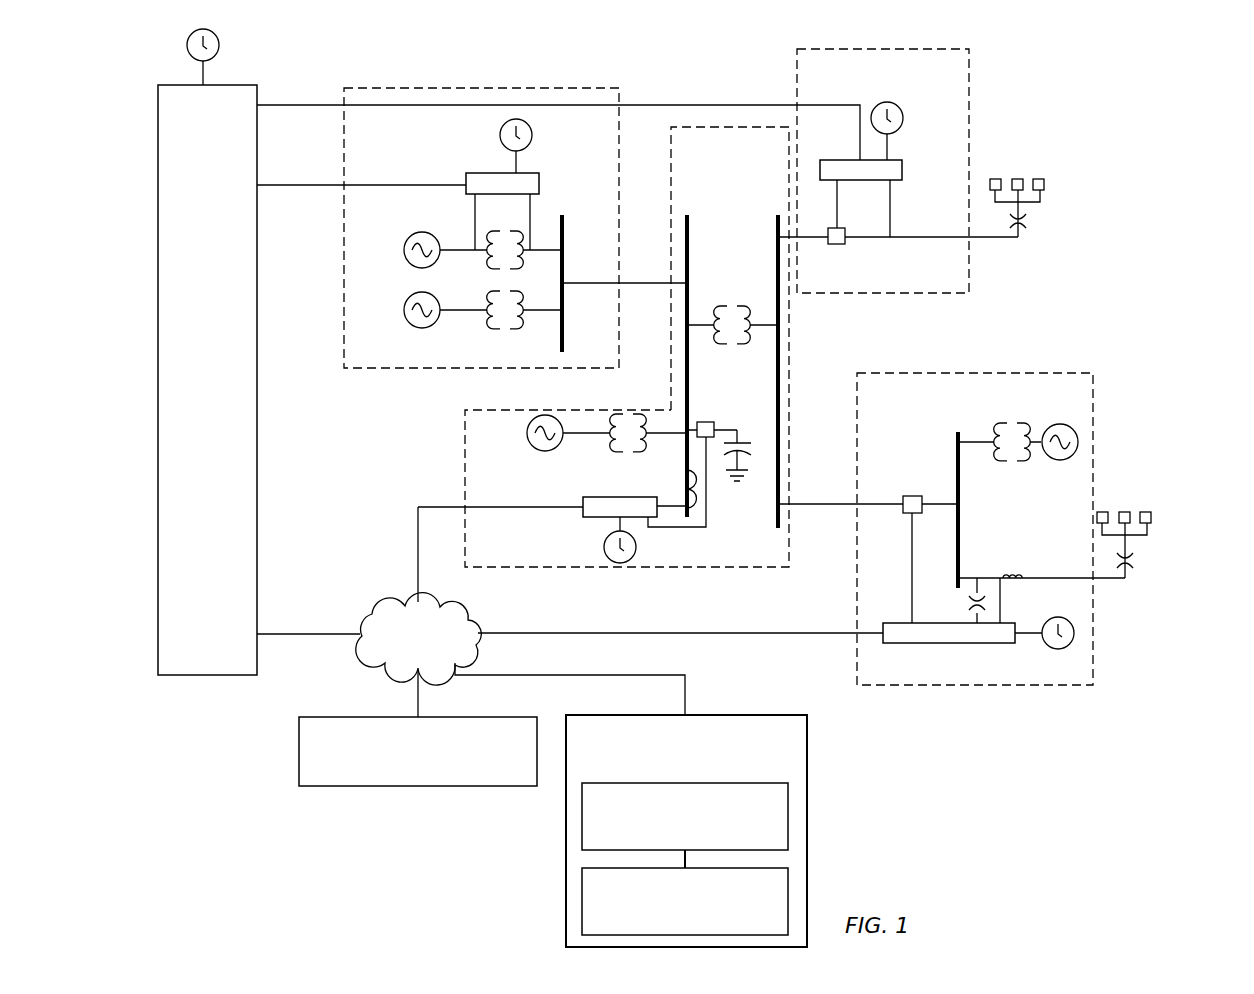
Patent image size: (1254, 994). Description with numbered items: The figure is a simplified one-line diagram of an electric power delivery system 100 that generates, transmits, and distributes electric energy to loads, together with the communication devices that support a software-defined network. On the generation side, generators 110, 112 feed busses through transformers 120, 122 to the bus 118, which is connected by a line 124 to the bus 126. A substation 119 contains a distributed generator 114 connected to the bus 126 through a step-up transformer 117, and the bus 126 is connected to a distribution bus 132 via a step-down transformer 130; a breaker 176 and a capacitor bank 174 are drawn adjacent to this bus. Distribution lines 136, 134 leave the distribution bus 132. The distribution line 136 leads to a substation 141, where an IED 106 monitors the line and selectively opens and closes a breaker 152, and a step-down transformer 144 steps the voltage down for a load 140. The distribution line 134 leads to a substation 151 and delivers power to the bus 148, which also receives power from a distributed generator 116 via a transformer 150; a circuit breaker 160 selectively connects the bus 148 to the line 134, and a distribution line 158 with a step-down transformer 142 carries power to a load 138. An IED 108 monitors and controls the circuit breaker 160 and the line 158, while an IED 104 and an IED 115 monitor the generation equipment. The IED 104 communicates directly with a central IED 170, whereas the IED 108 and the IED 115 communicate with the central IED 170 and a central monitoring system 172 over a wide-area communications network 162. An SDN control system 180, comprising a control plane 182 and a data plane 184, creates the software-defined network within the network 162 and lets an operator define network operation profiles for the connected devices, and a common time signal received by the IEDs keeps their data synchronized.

The electric power delivery system 100 is at (1082, 105).
The IED 104 is at (490, 173).
The IED 106 is at (833, 158).
The IED 108 is at (992, 645).
The generator 110 is at (403, 246).
The generator 112 is at (403, 306).
The generator 114 is at (526, 432).
The IED 115 is at (647, 497).
The distributed generator 116 is at (1047, 462).
The step-up transformer 117 is at (612, 447).
The bus 118 is at (566, 333).
The substation 119 is at (568, 569).
The transformer 120 is at (485, 266).
The transformer 122 is at (505, 331).
The line 124 is at (636, 284).
The bus 126 is at (690, 348).
The step-down transformer 130 is at (736, 308).
The distribution bus 132 is at (775, 492).
The distribution line 134 is at (870, 506).
The distribution line 136 is at (823, 244).
The load 138 is at (1123, 510).
The load 140 is at (1053, 182).
The substation 141 is at (945, 293).
The step-down transformer 142 is at (1135, 560).
The step-down transformer 144 is at (1028, 221).
The bus 148 is at (955, 433).
The transformer 150 is at (1005, 421).
The substation 151 is at (1037, 687).
The breaker 152 is at (845, 243).
The distribution line 158 is at (1037, 574).
The circuit breaker 160 is at (912, 494).
The communications network 162 is at (407, 654).
The central IED 170 is at (196, 400).
The central monitoring system 172 is at (406, 773).
The capacitor bank 174 is at (741, 441).
The breaker 176 is at (706, 420).
The SDN control system 180 is at (674, 773).
The control plane 182 is at (673, 924).
The data plane 184 is at (673, 839).